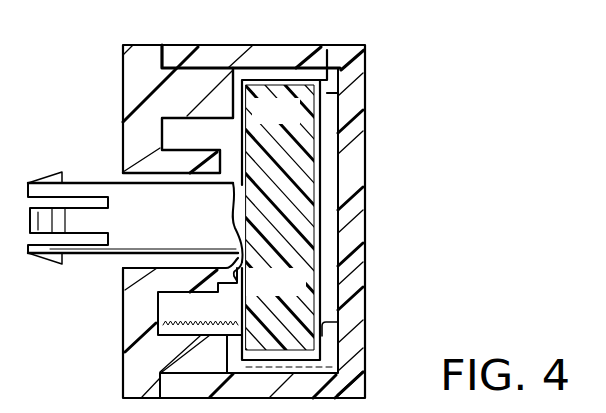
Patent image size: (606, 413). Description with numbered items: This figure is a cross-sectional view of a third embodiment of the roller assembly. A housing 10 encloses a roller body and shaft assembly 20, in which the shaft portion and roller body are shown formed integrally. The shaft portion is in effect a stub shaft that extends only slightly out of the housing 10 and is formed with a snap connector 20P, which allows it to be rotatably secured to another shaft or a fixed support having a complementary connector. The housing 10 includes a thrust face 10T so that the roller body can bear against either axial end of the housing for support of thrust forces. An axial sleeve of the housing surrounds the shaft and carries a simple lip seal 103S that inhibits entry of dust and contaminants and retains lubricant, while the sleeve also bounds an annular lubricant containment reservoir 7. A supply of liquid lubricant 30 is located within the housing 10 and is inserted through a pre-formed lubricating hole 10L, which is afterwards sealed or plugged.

The housing 10 is at (352, 129).
The lubricating hole 10L is at (327, 50).
The thrust face 10T is at (275, 217).
The lubricant containment reservoir 7 is at (197, 146).
The roller body and shaft assembly 20 is at (236, 219).
The snap connector 20P is at (48, 181).
The lip seal 103S is at (233, 271).
The liquid lubricant 30 is at (340, 324).